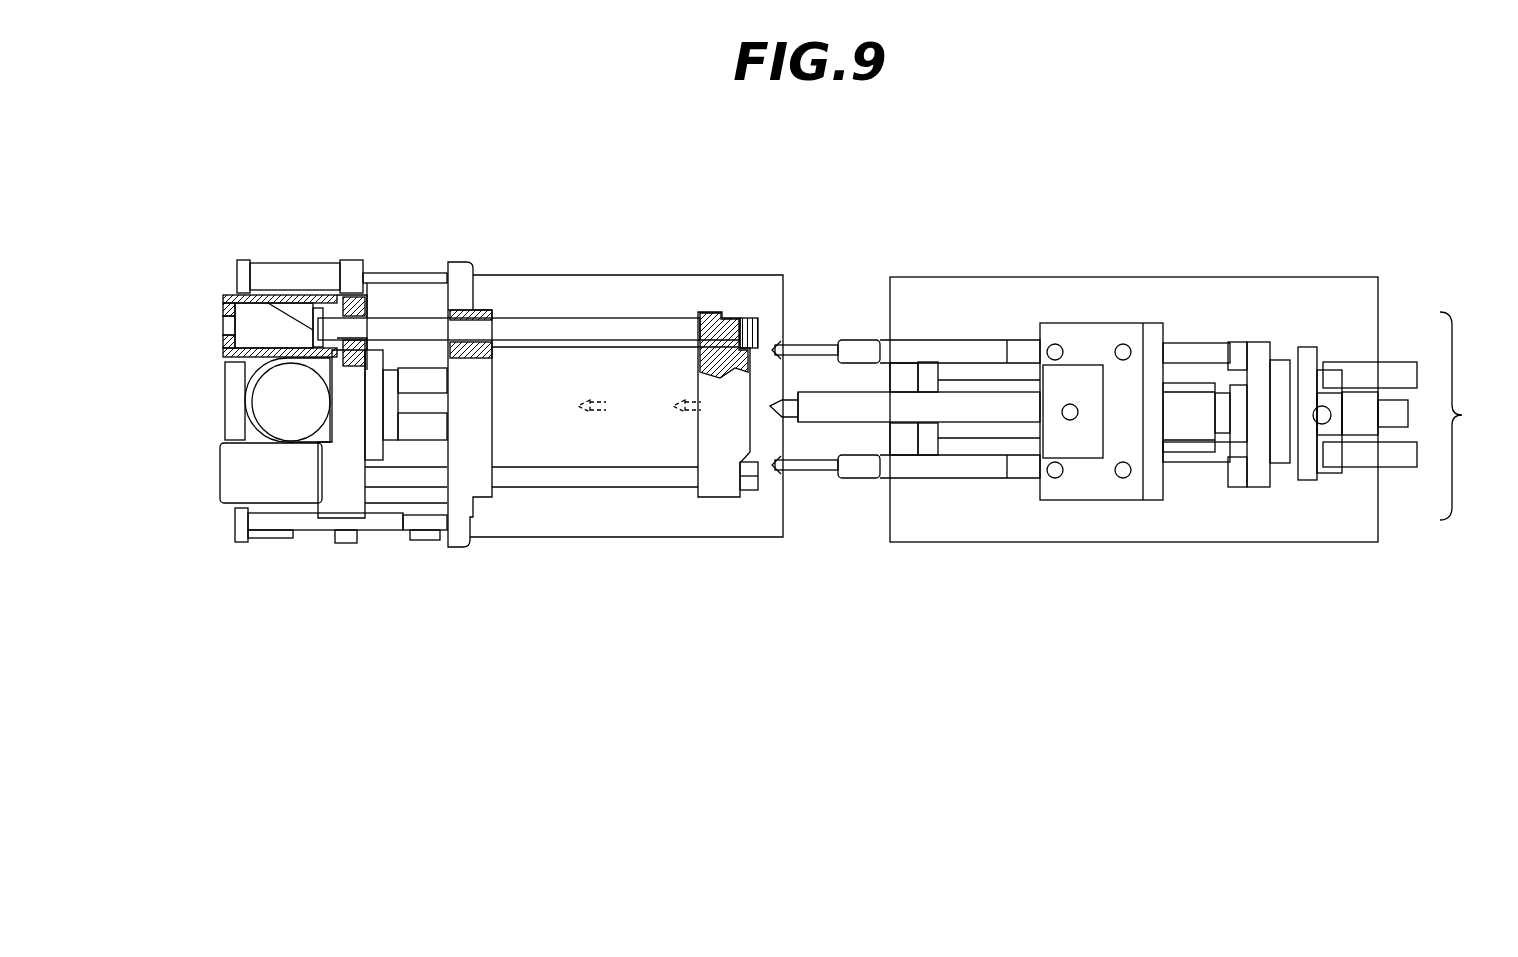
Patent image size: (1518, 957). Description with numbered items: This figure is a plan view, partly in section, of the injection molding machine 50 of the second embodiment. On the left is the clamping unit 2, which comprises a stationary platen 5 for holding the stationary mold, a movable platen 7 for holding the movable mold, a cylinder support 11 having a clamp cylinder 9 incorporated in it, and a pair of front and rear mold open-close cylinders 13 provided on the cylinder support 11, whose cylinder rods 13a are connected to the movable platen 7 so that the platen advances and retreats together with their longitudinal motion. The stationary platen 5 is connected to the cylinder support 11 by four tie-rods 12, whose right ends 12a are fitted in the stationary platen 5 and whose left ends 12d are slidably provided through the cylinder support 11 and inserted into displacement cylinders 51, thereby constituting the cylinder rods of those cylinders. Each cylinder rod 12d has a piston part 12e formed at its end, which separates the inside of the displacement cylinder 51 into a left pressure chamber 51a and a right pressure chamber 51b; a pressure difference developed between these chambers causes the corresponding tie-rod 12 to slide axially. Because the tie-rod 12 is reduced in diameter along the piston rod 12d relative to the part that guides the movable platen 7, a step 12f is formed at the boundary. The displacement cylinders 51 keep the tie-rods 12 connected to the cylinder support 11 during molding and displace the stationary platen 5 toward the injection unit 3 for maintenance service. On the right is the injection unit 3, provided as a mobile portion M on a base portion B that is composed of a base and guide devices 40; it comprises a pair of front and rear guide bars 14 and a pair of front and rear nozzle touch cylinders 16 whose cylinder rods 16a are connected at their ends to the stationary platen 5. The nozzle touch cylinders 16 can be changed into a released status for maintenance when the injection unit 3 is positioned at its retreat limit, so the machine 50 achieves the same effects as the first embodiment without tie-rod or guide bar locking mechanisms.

The clamping unit 2 is at (566, 206).
The injection unit 3 is at (1133, 259).
The stationary platen 5 is at (702, 310).
The movable platen 7 is at (464, 285).
The clamp cylinder 9 is at (392, 378).
The cylinder support 11 is at (338, 510).
The tie-rod 12 is at (612, 333).
The right end of tie-rod 12a is at (722, 310).
The left end of tie-rod 12d is at (380, 325).
The piston part 12e is at (283, 272).
The step 12f is at (437, 295).
The mold open-close cylinder 13 is at (295, 280).
The cylinder rod 13a is at (413, 275).
The guide bar 14 is at (993, 373).
The nozzle touch cylinder 16 is at (903, 347).
The cylinder rod 16a is at (832, 342).
The guide device 40 is at (932, 377).
The injection molding machine 50 is at (1221, 218).
The displacement cylinder 51 is at (228, 297).
The left pressure chamber 51a is at (272, 338).
The right pressure chamber 51b is at (308, 380).
The mobile portion M is at (1475, 416).
The base portion B is at (1378, 490).